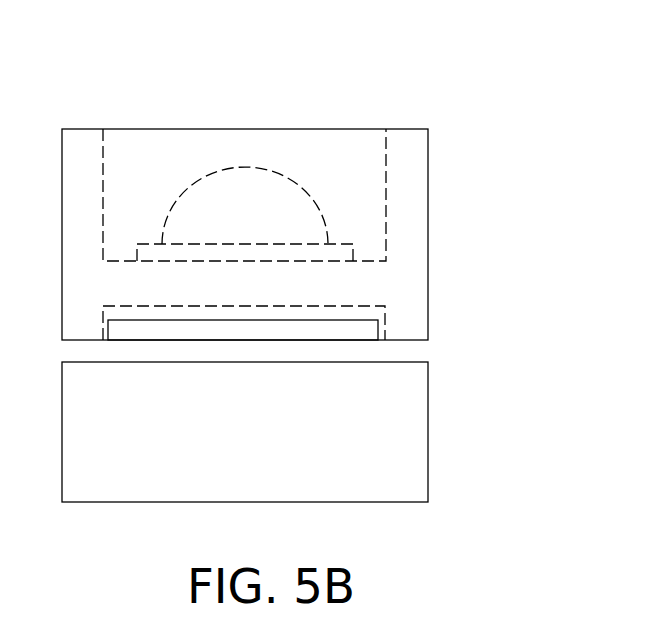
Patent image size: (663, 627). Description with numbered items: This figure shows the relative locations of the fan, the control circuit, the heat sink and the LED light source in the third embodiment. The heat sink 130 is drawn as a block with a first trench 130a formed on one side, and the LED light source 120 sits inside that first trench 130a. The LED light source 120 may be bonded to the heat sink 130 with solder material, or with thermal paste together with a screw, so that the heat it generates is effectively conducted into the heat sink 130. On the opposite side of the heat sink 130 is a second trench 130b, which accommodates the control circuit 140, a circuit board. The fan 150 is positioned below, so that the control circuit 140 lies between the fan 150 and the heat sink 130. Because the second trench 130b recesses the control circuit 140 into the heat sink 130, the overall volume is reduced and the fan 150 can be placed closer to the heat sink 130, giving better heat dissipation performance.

The LED light source 120 is at (227, 185).
The heat sink 130 is at (402, 228).
The first trench 130a is at (386, 197).
The second trench 130b is at (370, 308).
The control circuit 140 is at (365, 326).
The fan 150 is at (403, 433).